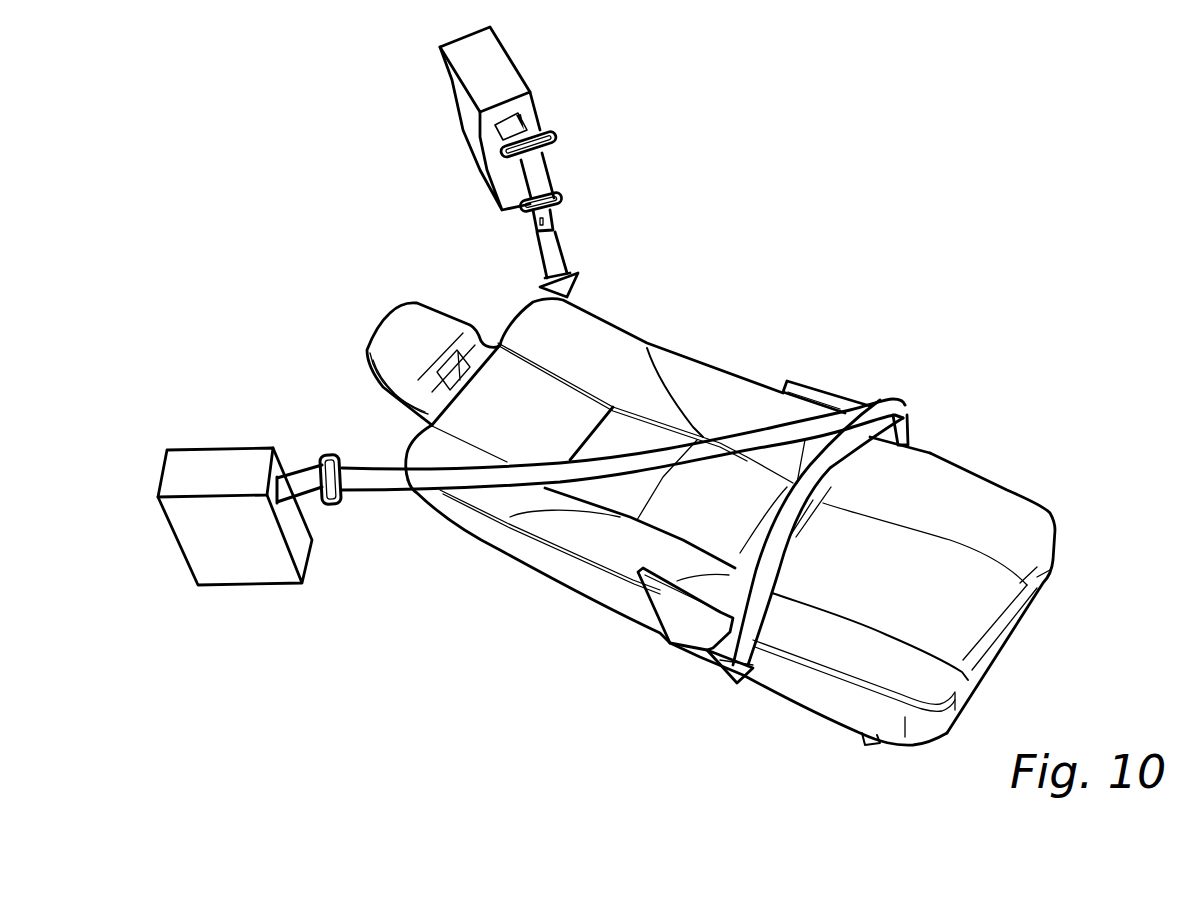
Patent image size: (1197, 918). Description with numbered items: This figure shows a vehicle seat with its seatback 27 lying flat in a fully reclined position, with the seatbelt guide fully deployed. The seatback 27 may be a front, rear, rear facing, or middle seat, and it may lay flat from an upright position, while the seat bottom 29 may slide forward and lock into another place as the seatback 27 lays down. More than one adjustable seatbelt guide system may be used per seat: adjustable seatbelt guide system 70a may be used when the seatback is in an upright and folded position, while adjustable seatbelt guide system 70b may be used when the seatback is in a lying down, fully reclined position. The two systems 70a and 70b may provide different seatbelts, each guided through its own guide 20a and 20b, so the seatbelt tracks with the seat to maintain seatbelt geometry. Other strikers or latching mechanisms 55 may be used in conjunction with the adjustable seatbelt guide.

The adjustable seatbelt guide system 70a is at (460, 103).
The guide 20a is at (545, 128).
The adjustable seatbelt guide system 70b is at (202, 463).
The guide 20b is at (327, 457).
The seat bottom 29 is at (972, 493).
The seatback 27 is at (510, 543).
The striker or latching mechanism 55 is at (863, 740).